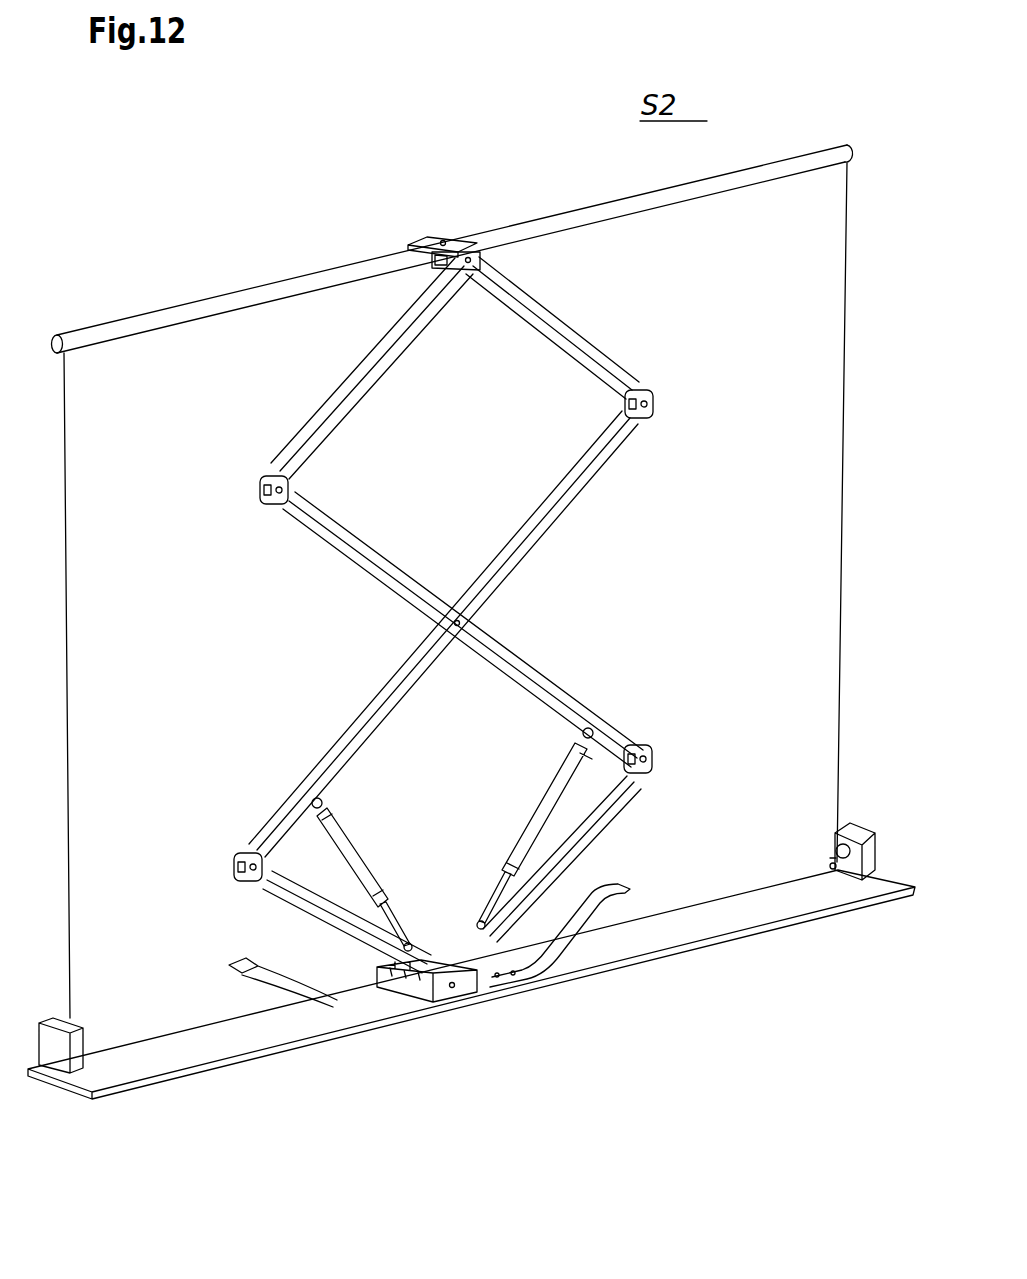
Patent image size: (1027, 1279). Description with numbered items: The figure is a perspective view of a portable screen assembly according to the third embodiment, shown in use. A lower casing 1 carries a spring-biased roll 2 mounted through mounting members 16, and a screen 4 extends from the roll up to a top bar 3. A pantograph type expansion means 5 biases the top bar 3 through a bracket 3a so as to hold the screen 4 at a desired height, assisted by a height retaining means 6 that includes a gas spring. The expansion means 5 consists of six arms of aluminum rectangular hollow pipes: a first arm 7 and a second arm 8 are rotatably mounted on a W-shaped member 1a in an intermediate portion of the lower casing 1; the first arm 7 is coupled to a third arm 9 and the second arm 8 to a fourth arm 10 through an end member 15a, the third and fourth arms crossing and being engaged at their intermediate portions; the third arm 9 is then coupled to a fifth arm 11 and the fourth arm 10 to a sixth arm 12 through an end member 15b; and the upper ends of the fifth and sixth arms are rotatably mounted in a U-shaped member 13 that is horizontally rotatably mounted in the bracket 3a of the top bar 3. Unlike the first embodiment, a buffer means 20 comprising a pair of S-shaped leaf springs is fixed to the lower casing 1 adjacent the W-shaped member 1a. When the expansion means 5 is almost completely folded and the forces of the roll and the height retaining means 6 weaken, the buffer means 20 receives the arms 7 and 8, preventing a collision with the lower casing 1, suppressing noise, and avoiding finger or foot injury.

The lower casing 1 is at (765, 905).
The W-shaped member 1a is at (465, 990).
The spring-biased roll 2 is at (836, 862).
The top bar 3 is at (765, 176).
The bracket 3a is at (442, 237).
The screen 4 is at (790, 603).
The expansion means 5 is at (494, 616).
The height retaining means 6 is at (527, 822).
The first arm 7 is at (297, 922).
The second arm 8 is at (567, 862).
The third arm 9 is at (358, 713).
The fourth arm 10 is at (553, 683).
The fifth arm 11 is at (582, 337).
The sixth arm 12 is at (353, 373).
The U-shaped member 13 is at (480, 258).
The end member 15a is at (653, 762).
The end member 15b is at (655, 404).
The mounting members 16 is at (863, 830).
The buffer means 20 is at (317, 1003).